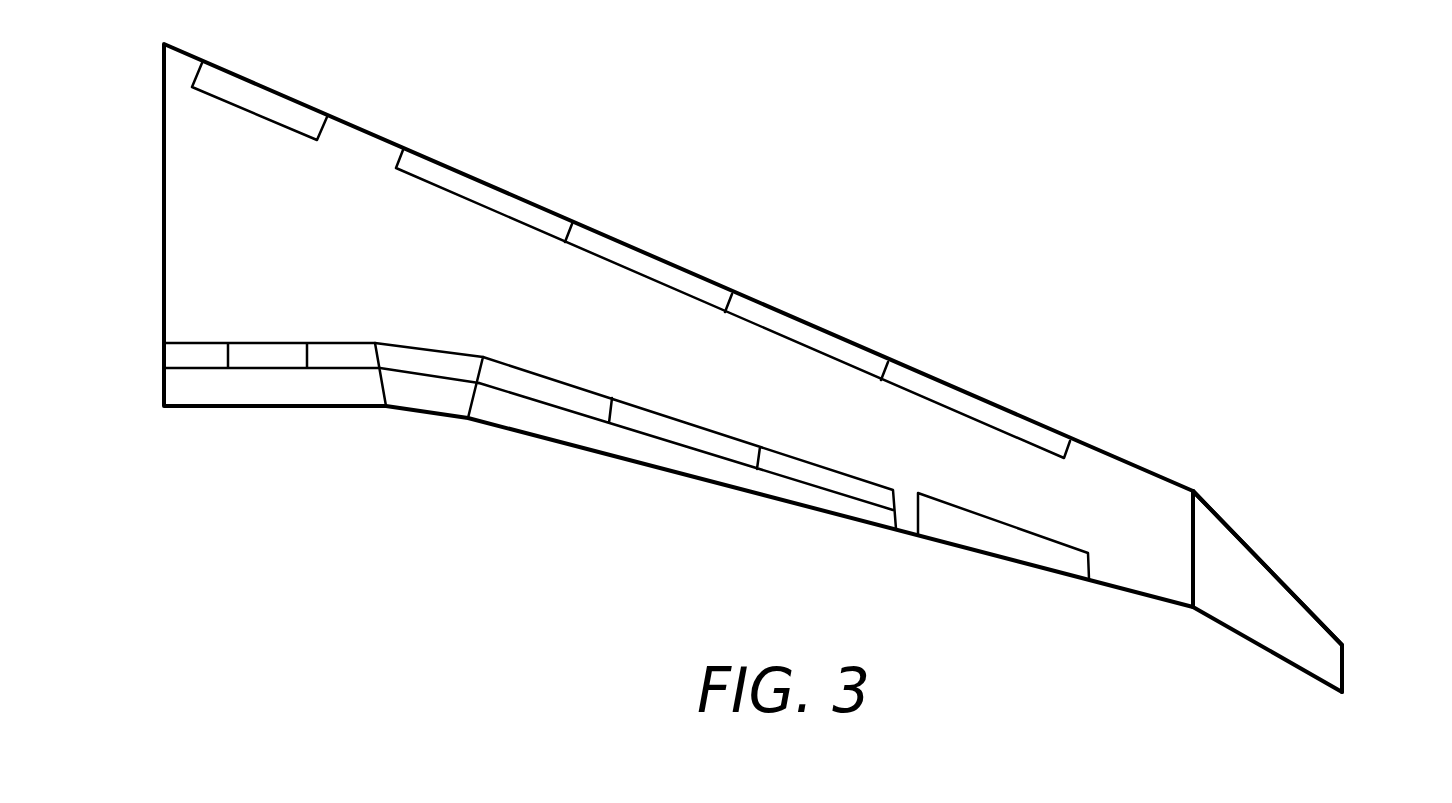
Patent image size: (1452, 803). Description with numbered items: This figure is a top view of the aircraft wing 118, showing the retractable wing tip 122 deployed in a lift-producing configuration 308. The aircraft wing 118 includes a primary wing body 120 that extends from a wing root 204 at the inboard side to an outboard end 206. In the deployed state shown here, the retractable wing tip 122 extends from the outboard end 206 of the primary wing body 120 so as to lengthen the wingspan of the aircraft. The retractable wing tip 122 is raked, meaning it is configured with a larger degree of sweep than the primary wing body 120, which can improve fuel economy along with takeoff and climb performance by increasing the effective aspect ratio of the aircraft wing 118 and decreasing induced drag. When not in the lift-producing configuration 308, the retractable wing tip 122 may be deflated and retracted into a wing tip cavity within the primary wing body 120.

The aircraft wing 118 is at (1046, 95).
The wing root 204 is at (167, 118).
The primary wing body 120 is at (358, 150).
The outboard end 206 is at (1195, 487).
The retractable wing tip 122 is at (1257, 588).
The lift-producing configuration 308 is at (1224, 669).